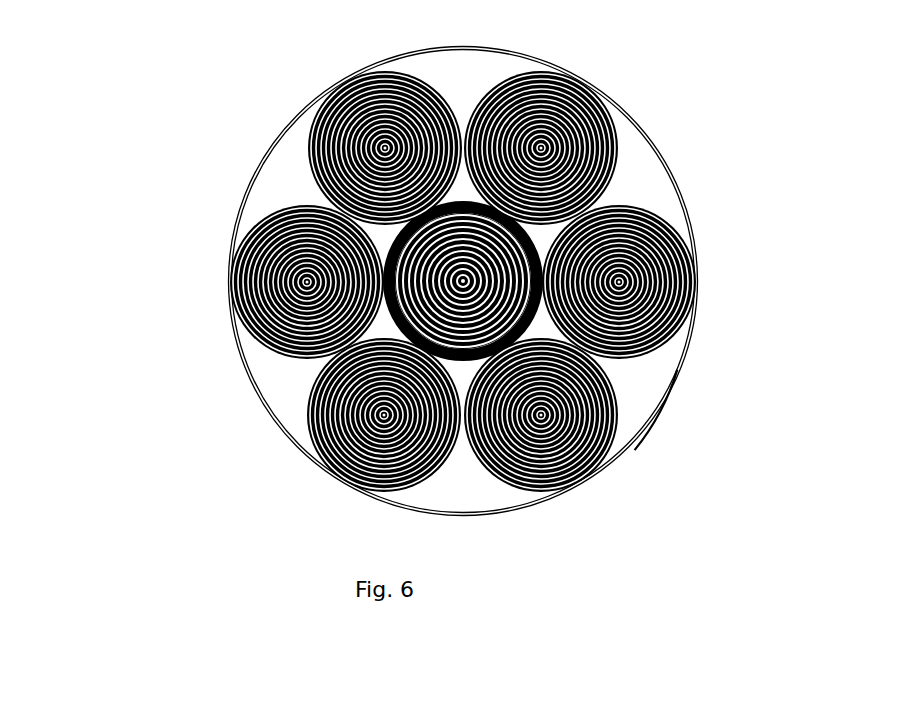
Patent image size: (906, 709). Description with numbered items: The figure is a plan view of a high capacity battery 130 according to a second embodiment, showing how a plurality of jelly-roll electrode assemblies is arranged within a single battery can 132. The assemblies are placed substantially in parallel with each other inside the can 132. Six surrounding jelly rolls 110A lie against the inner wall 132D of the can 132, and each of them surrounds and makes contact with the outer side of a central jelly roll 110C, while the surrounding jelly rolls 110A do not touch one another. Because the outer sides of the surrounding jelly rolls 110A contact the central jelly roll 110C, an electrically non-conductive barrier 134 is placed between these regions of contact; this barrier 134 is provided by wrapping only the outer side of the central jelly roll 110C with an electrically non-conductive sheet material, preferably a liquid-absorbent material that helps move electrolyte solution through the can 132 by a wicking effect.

The high capacity battery 130 is at (440, 271).
The battery can 132 is at (683, 193).
The inner wall of the can 132D is at (645, 408).
The electrically non-conductive barrier 134 is at (395, 237).
The central jelly roll 110C is at (393, 323).
The surrounding jelly rolls 110A is at (432, 92).